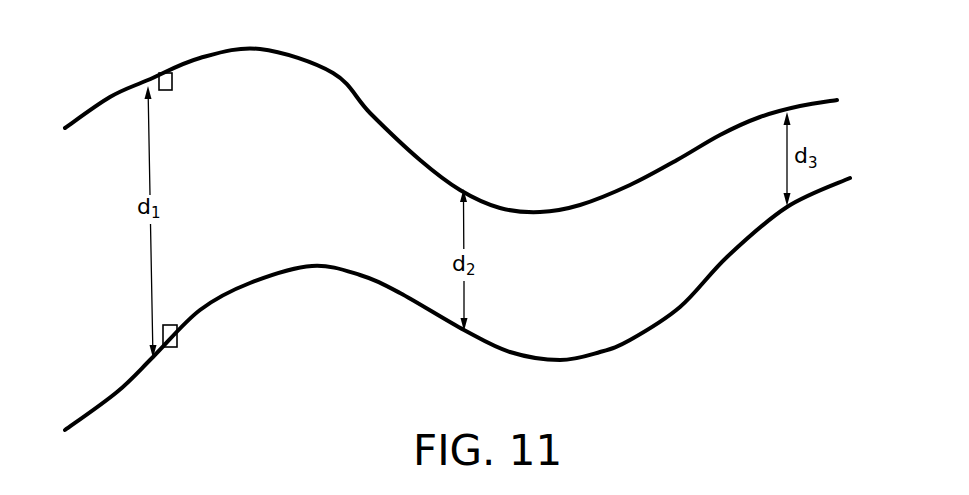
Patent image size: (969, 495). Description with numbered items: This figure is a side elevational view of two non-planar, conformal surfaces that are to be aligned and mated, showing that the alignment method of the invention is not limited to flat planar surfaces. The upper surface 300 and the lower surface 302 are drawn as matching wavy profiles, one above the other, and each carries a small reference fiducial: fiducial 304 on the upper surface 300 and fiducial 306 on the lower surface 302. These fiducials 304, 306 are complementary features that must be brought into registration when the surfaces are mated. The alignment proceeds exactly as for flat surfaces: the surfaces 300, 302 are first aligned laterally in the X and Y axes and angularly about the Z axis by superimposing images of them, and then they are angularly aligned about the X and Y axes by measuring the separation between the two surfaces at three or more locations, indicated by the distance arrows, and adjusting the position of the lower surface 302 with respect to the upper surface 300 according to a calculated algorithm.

The upper conformal surface 300 is at (110, 97).
The lower conformal surface 302 is at (118, 391).
The reference fiducial 304 is at (173, 81).
The reference fiducial 306 is at (178, 326).